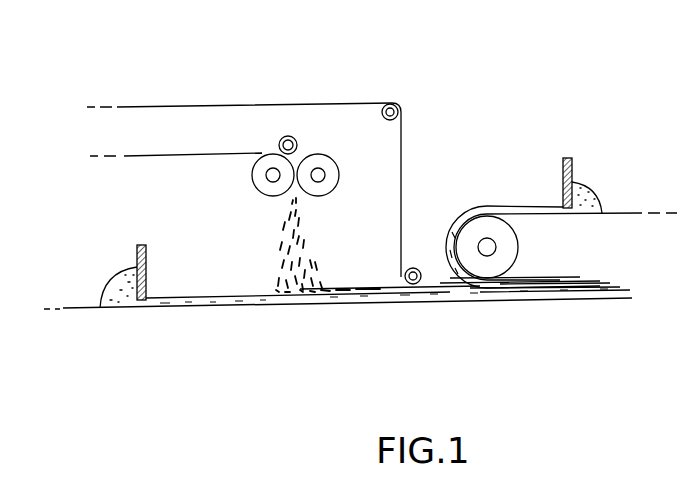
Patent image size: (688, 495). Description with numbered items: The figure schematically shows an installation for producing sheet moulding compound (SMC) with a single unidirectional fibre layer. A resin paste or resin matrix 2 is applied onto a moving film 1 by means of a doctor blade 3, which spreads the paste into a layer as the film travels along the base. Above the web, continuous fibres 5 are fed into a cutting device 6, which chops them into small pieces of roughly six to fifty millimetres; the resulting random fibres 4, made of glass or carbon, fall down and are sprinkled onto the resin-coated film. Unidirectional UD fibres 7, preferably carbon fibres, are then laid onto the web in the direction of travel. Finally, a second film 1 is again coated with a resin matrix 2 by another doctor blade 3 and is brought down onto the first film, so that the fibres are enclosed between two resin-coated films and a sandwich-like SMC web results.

The film 1 is at (78, 312).
The resin paste or resin matrix 2 is at (113, 284).
The doctor blade 3 is at (136, 250).
The random fibres 4 is at (305, 244).
The continuous fibres 5 is at (220, 153).
The cutting device 6 is at (262, 186).
The unidirectional UD fibres 7 is at (280, 103).